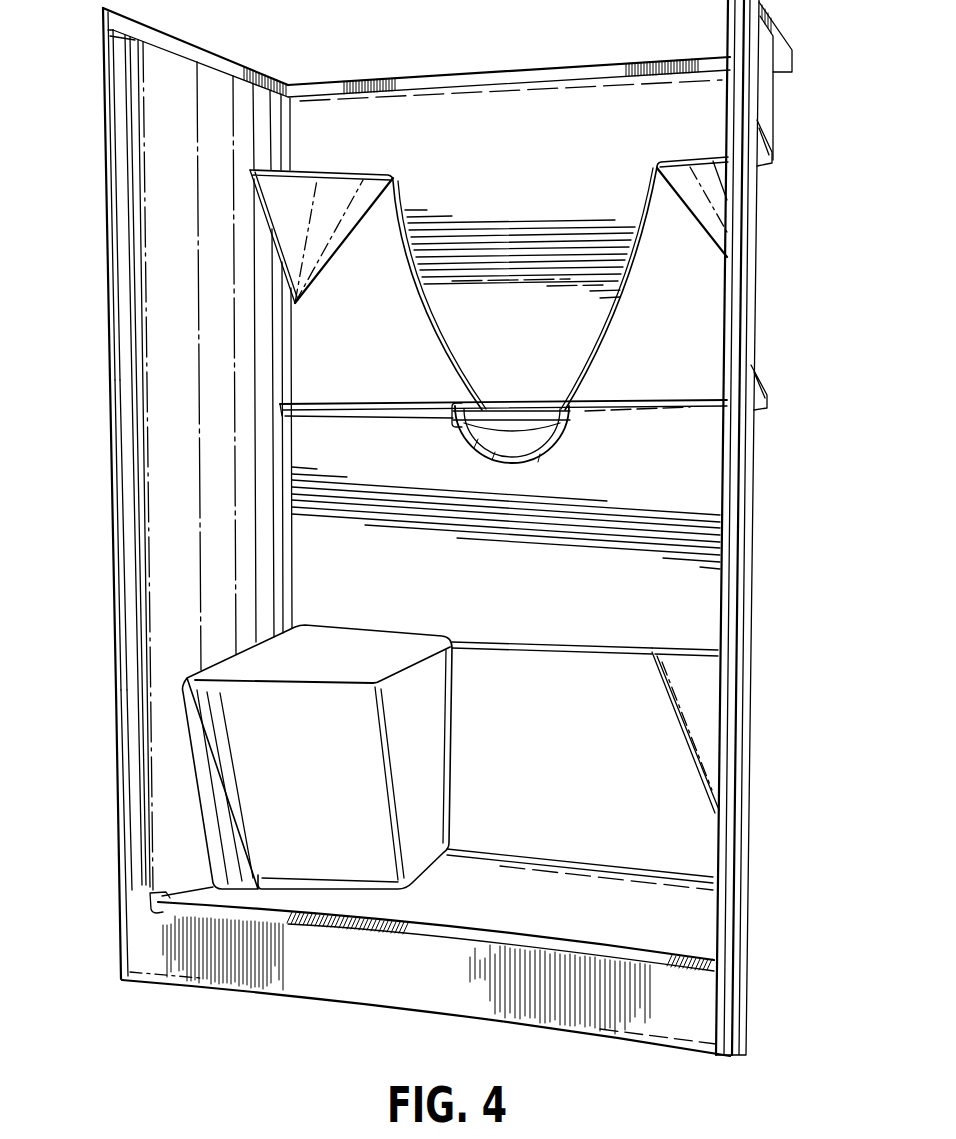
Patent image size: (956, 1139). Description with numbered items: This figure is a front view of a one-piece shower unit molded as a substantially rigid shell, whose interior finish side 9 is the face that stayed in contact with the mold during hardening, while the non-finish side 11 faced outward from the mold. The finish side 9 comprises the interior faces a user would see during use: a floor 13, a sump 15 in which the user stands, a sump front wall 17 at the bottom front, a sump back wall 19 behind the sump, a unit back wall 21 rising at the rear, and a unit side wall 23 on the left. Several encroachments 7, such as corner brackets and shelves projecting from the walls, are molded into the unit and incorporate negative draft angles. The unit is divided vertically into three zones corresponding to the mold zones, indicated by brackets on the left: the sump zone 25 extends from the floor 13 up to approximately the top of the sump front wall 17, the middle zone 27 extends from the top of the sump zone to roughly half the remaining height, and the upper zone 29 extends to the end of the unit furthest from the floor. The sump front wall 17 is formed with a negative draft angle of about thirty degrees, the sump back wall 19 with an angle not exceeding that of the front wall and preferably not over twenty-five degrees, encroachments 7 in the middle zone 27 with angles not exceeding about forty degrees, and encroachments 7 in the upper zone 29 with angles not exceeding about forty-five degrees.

The encroachments 7 is at (333, 207).
The finish side 9 is at (618, 103).
The non-finish side 11 is at (755, 311).
The floor 13 is at (556, 880).
The sump 15 is at (690, 921).
The sump front wall 17 is at (460, 921).
The sump back wall 19 is at (697, 827).
The unit back wall 21 is at (488, 108).
The unit side walls 23 is at (167, 690).
The sump zone 25 is at (113, 697).
The middle zone 27 is at (107, 383).
The upper zone 29 is at (98, 35).